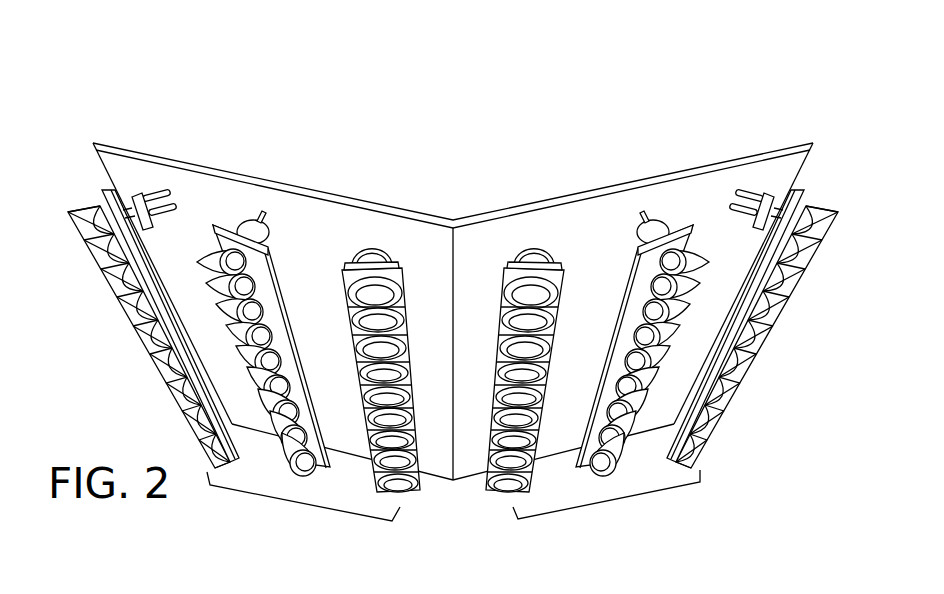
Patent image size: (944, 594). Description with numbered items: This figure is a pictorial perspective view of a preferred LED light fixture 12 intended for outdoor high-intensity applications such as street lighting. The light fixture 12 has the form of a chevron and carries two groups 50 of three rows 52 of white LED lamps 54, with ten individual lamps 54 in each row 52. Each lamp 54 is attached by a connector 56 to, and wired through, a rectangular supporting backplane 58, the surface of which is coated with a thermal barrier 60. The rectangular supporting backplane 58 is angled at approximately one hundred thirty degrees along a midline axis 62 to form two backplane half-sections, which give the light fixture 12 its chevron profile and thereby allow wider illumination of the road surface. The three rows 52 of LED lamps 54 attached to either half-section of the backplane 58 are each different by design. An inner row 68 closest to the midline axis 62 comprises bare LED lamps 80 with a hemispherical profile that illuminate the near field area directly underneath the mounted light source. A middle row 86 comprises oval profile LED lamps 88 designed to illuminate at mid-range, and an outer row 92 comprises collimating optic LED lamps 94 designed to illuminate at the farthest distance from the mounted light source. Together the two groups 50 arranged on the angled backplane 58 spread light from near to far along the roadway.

The LED light fixture 12 is at (487, 72).
The group 50 is at (303, 507).
The row 52 is at (121, 371).
The white LED lamp 54 is at (370, 294).
The connector 56 is at (737, 190).
The rectangular supporting backplane 58 is at (237, 205).
The thermal barrier 60 is at (136, 196).
The midline axis 62 is at (452, 178).
The inner row 68 is at (406, 181).
The bare LED lamp 80 is at (529, 293).
The middle row 86 is at (208, 146).
The oval profile LED lamp 88 is at (673, 263).
The outer row 92 is at (66, 194).
The collimating optic LED lamp 94 is at (100, 222).